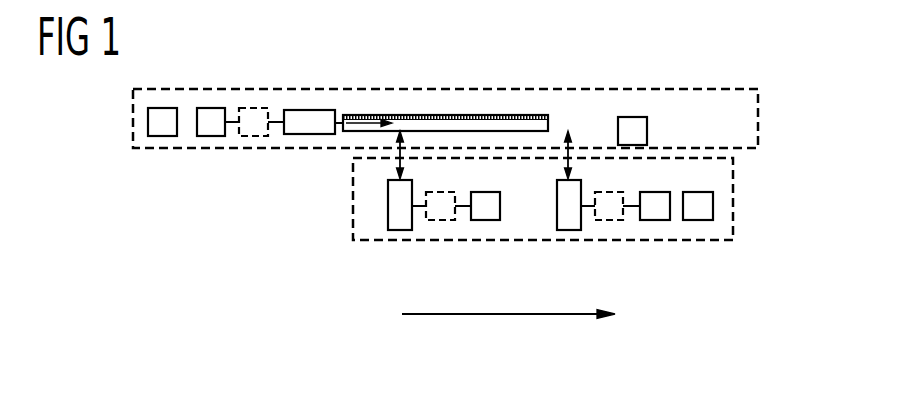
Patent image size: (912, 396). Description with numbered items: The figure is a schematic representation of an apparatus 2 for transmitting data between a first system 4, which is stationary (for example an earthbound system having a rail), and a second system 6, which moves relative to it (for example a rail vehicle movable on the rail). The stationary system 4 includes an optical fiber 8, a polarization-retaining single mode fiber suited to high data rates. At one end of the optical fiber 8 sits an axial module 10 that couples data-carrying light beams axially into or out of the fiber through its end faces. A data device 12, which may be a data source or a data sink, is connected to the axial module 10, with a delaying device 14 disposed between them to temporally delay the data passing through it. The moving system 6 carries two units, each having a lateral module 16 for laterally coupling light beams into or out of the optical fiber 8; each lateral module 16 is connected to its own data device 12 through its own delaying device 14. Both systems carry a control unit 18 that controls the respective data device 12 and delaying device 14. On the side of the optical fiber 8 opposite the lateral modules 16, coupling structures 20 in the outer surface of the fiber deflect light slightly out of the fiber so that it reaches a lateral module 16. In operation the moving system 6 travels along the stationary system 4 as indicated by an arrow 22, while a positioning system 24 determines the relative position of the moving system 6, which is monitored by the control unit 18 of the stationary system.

The apparatus 2 is at (808, 86).
The first system 4 is at (217, 149).
The second system 6 is at (353, 190).
The optical fiber 8 is at (413, 115).
The axial module 10 is at (310, 110).
The data device 12 is at (211, 108).
The delaying device 14 is at (255, 108).
The lateral module 16 is at (400, 230).
The control unit 18 is at (161, 108).
The coupling structures 20 is at (490, 115).
The arrow 22 is at (504, 316).
The positioning system 24 is at (632, 117).